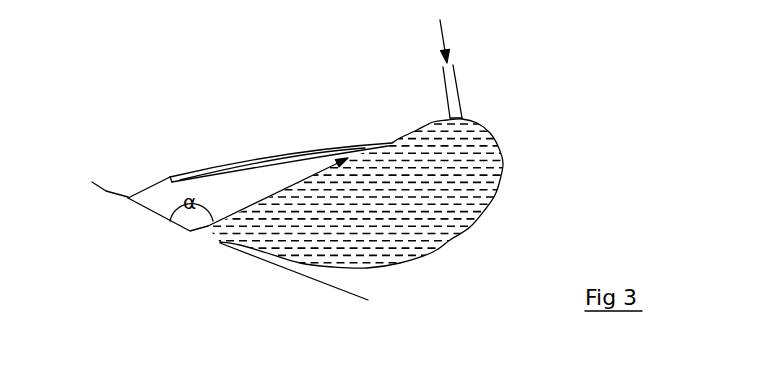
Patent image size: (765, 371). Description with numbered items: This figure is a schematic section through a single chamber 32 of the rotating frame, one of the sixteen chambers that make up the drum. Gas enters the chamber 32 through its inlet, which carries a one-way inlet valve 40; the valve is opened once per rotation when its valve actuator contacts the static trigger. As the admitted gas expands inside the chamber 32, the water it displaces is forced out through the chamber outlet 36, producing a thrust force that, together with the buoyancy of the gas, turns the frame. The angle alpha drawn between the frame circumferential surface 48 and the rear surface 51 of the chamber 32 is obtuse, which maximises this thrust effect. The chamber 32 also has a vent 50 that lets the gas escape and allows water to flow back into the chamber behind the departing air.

The chamber 32 is at (375, 252).
The chamber outlet 36 is at (221, 236).
The one-way inlet valve 40 is at (477, 115).
The frame circumferential surface 48 is at (156, 215).
The vent 50 is at (348, 158).
The rear surface 51 is at (276, 194).